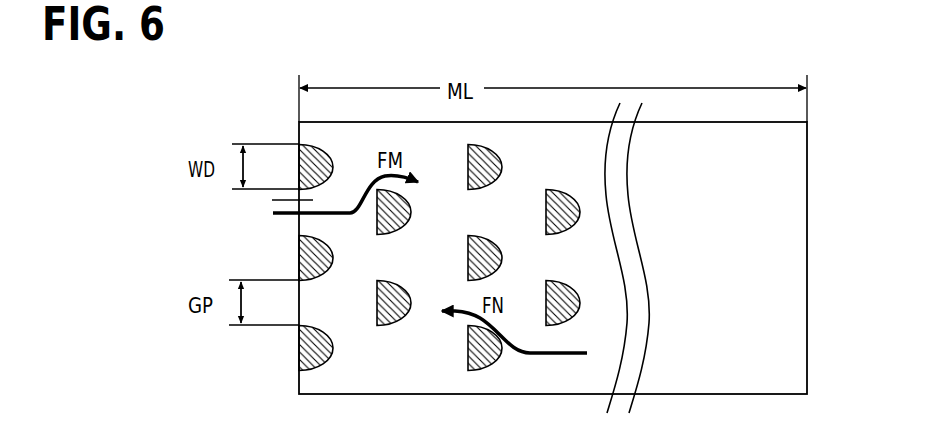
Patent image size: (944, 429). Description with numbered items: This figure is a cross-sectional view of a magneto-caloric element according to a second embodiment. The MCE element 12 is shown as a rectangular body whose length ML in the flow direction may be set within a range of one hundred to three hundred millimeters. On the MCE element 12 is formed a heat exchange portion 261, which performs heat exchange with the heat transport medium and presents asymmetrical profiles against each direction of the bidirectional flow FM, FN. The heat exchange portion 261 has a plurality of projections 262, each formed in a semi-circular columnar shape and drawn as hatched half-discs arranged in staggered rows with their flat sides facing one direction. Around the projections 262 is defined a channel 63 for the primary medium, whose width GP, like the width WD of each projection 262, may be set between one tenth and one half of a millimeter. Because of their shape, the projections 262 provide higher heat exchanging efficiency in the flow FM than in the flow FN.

The MCE element 12 is at (299, 133).
The heat exchange portion 261 is at (215, 254).
The projection 262 is at (300, 256).
The channel 63 is at (272, 200).